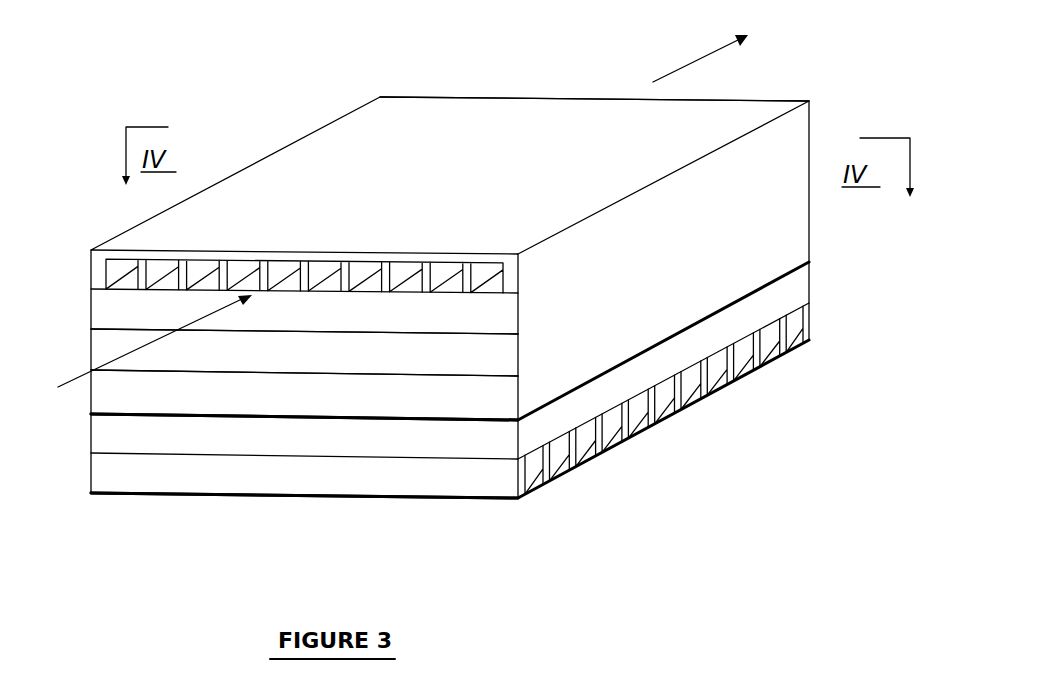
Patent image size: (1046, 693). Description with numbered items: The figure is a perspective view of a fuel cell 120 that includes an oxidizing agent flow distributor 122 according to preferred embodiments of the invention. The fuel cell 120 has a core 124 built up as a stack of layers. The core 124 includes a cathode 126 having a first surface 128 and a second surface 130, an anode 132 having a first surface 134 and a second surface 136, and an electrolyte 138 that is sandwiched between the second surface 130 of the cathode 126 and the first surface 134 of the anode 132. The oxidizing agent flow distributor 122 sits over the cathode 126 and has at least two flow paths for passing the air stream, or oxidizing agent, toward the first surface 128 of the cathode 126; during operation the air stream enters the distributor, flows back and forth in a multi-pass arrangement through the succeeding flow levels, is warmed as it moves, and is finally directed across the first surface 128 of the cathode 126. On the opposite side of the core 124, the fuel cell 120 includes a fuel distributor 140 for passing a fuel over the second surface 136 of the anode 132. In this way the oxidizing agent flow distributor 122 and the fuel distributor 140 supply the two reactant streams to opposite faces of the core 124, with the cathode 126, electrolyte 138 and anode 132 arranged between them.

The fuel cell 120 is at (325, 84).
The oxidizing agent flow distributor 122 is at (587, 105).
The core 124 is at (72, 379).
The cathode 126 is at (503, 376).
The first surface of the cathode 128 is at (502, 334).
The second surface of the cathode 130 is at (480, 377).
The anode 132 is at (202, 440).
The first surface of the anode 134 is at (446, 414).
The second surface of the anode 136 is at (485, 462).
The electrolyte 138 is at (257, 408).
The fuel distributor 140 is at (130, 475).